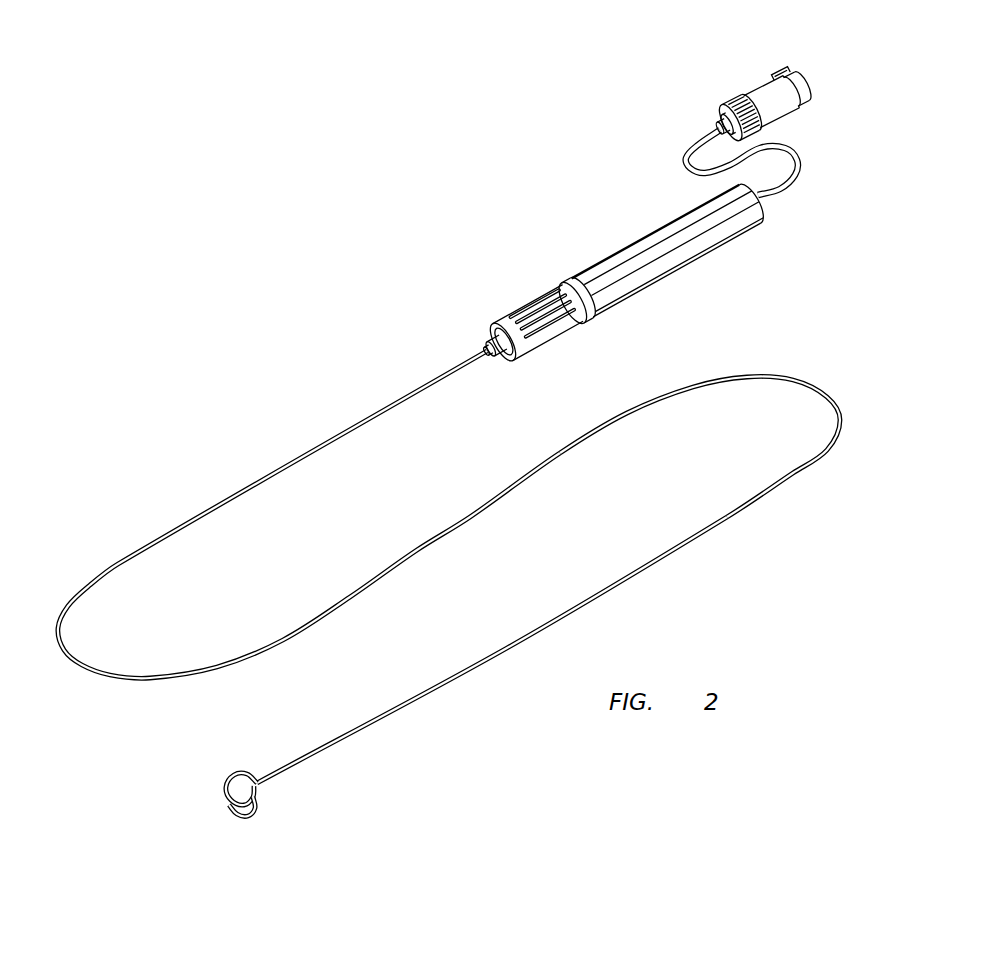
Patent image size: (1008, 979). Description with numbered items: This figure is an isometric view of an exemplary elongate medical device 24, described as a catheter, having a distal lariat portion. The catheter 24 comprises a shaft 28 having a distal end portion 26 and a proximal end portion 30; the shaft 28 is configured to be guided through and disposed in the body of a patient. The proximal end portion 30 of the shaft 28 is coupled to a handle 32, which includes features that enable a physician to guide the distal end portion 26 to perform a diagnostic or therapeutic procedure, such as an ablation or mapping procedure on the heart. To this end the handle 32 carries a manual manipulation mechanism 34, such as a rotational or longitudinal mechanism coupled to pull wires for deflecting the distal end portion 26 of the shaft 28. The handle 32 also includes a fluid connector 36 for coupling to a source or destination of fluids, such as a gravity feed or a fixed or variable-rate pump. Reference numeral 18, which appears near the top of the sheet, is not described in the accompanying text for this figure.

The retrieval device 18 is at (118, 8).
The elongate medical device 24 is at (270, 370).
The distal end portion 26 is at (222, 778).
The shaft 28 is at (805, 380).
The proximal end portion 30 is at (480, 348).
The handle 32 is at (733, 242).
The manual manipulation mechanism 34 is at (537, 310).
The fluid connector 36 is at (780, 70).